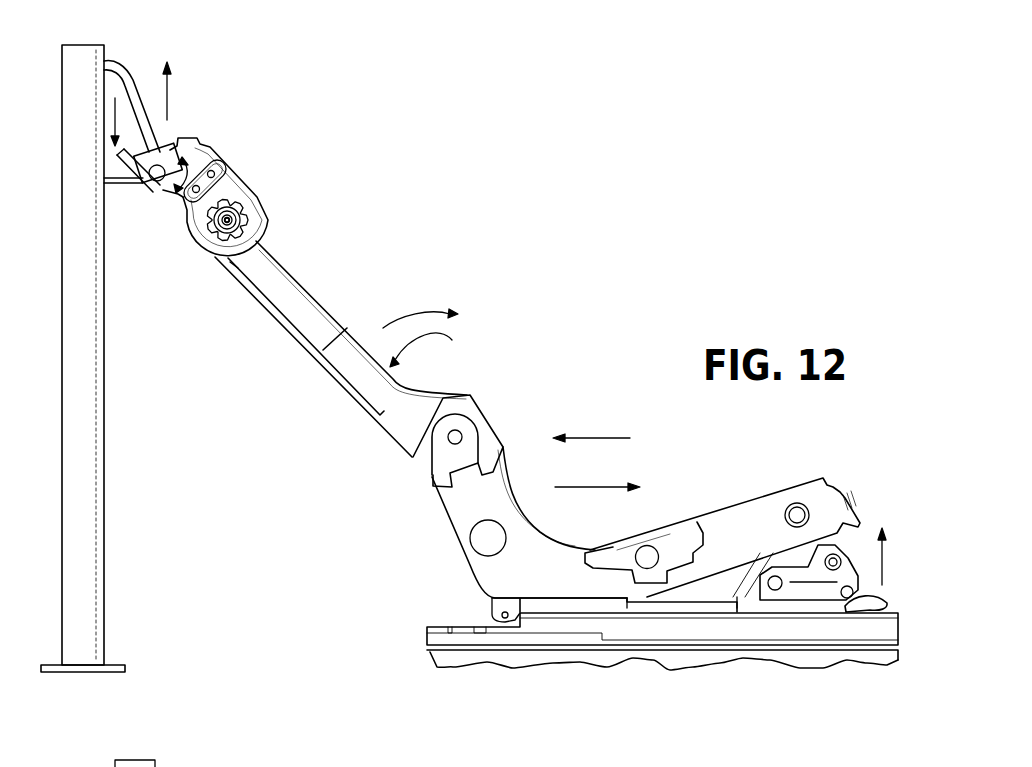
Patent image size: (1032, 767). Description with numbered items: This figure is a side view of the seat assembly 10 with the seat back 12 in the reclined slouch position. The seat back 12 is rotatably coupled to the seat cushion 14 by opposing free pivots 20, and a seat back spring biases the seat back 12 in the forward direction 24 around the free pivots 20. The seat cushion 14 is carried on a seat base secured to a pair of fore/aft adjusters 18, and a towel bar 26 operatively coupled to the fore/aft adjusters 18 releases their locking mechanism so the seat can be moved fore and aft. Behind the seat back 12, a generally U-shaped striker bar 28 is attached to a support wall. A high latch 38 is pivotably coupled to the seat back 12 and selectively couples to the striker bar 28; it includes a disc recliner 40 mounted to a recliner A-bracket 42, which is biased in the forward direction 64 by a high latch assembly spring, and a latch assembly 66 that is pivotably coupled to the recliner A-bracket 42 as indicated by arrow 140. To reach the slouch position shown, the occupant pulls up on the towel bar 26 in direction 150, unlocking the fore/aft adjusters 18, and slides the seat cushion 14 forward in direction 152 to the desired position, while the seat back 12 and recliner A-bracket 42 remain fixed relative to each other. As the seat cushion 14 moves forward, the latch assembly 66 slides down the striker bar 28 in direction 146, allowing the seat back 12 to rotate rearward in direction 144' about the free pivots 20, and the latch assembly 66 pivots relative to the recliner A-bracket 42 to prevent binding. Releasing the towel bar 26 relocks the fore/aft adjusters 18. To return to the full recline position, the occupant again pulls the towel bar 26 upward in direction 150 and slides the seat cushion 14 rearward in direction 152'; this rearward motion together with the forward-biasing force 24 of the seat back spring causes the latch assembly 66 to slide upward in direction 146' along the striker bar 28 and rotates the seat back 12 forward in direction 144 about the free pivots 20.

The seat assembly 10 is at (546, 293).
The seat back 12 is at (284, 298).
The seat cushion 14 is at (768, 520).
The fore/aft adjusters 18 is at (757, 630).
The free pivots 20 is at (460, 437).
The forward direction (arrow) 24 is at (402, 414).
The towel bar 26 is at (880, 603).
The striker bar 28 is at (117, 62).
The high latch 38 is at (266, 209).
The disc recliner 40 is at (248, 220).
The recliner A-bracket 42 is at (228, 185).
The forward direction (arrow) 64 is at (207, 238).
The latch assembly 66 is at (150, 150).
The pivotable coupling (arrow) 140 is at (196, 143).
The forward rotation (arrow) 144 is at (420, 293).
The rearward rotation (arrow) 144' is at (445, 357).
The downward sliding (arrow) 146 is at (70, 116).
The upward sliding (arrow) 146' is at (194, 87).
The upward pull (arrow) 150 is at (888, 558).
The forward sliding (arrow) 152 is at (602, 471).
The rearward sliding (arrow) 152' is at (598, 413).